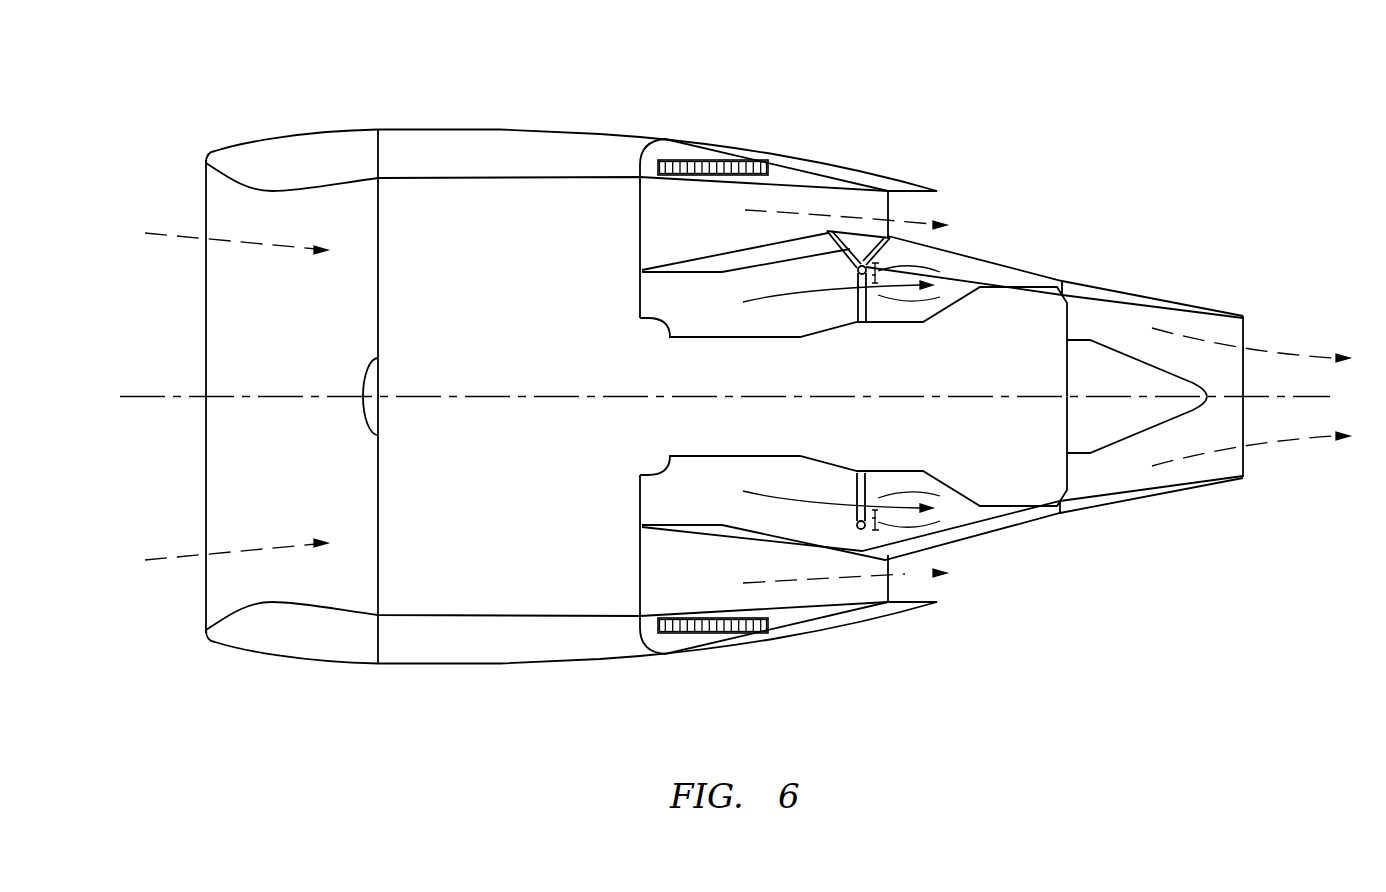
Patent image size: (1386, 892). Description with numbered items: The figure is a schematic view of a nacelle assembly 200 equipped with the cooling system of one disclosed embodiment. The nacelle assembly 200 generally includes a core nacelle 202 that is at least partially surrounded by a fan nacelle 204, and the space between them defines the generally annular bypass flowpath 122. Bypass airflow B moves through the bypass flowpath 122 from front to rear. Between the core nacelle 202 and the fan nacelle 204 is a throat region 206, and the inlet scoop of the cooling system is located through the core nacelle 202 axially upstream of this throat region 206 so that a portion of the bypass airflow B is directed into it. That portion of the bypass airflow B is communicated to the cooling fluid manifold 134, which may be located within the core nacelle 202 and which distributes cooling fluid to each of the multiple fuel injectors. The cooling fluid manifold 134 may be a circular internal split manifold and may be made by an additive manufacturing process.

The nacelle assembly 200 is at (725, 229).
The fan nacelle 204 is at (620, 148).
The bypass flowpath 122 is at (708, 232).
The throat region 206 is at (847, 231).
The cooling fluid manifold 134 is at (864, 266).
The core nacelle 202 is at (1023, 272).
The bypass airflow B is at (902, 575).